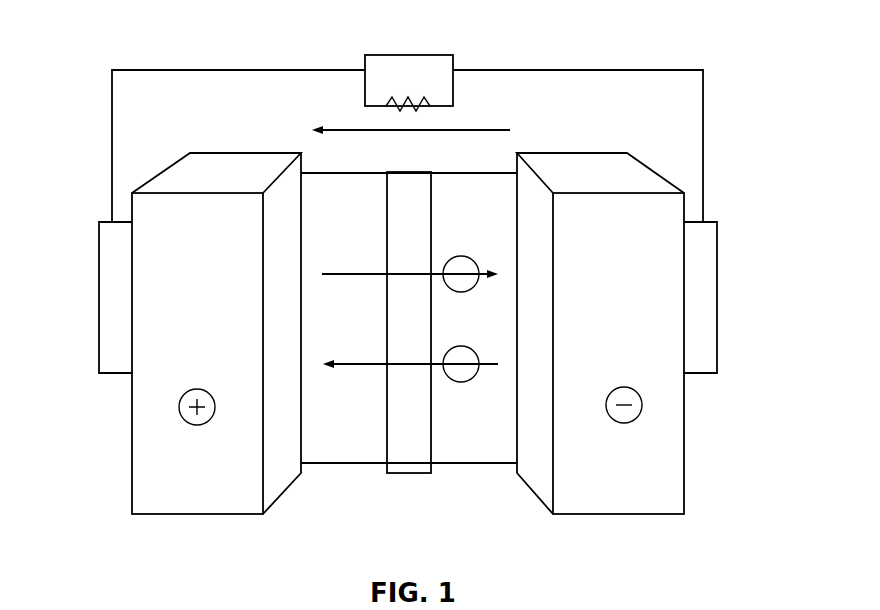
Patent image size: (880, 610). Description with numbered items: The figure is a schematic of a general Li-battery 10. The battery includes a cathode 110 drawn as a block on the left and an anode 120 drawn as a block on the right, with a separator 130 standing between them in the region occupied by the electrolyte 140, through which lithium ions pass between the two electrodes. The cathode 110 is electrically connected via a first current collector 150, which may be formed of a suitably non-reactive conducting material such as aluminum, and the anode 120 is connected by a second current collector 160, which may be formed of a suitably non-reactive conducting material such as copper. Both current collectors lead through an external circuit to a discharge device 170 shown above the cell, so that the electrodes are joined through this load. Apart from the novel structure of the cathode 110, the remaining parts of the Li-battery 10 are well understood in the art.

The Li-battery 10 is at (613, 89).
The cathode 110 is at (168, 172).
The anode 120 is at (662, 175).
The separator 130 is at (406, 477).
The electrolyte 140 is at (461, 196).
The first current collector 150 is at (99, 272).
The second current collector 160 is at (717, 270).
The discharge device 170 is at (409, 83).